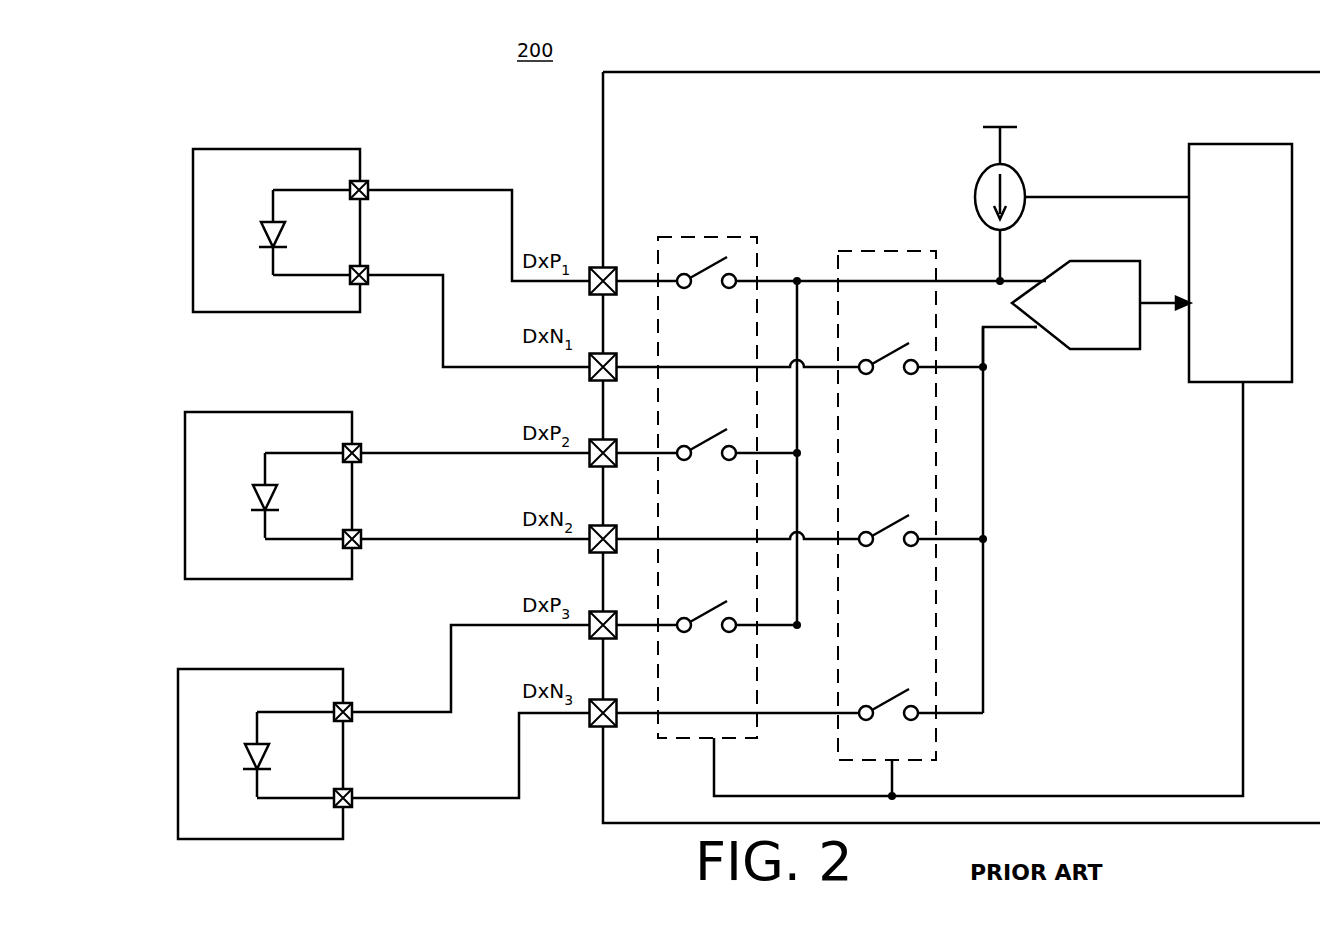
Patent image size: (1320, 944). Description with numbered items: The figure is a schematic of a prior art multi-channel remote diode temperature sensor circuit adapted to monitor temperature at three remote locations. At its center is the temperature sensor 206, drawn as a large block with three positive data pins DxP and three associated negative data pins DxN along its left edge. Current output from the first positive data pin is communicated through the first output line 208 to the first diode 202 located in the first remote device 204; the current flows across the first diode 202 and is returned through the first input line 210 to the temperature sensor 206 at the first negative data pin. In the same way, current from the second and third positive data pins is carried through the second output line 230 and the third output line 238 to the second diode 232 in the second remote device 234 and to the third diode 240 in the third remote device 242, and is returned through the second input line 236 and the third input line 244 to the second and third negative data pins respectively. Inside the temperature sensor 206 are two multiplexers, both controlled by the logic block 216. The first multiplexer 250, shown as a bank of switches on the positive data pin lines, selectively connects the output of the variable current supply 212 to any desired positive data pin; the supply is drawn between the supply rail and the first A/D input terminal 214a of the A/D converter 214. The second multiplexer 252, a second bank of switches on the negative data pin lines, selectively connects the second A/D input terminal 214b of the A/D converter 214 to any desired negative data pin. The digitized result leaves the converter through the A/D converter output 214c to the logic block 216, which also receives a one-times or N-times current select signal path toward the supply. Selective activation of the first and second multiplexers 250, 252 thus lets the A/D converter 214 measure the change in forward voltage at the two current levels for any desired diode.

The first diode 202 is at (271, 218).
The first remote device 204 is at (262, 149).
The temperature sensor 206 is at (1105, 72).
The first output line 208 is at (405, 190).
The first input line 210 is at (410, 275).
The variable current supply 212 is at (980, 178).
The A/D converter 214 is at (1115, 349).
The first A/D input terminal 214a is at (1050, 268).
The second A/D input terminal 214b is at (1040, 350).
The A/D converter output 214c is at (1146, 300).
The logic block 216 is at (1220, 144).
The second output line 230 is at (405, 453).
The second diode 232 is at (263, 482).
The second remote device 234 is at (255, 412).
The second input line 236 is at (415, 539).
The third output line 238 is at (372, 712).
The third diode 240 is at (255, 742).
The third remote device 242 is at (245, 669).
The third input line 244 is at (380, 798).
The first multiplexer 250 is at (698, 237).
The second multiplexer 252 is at (862, 251).